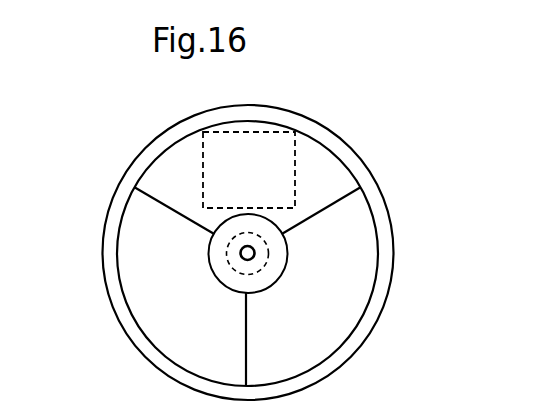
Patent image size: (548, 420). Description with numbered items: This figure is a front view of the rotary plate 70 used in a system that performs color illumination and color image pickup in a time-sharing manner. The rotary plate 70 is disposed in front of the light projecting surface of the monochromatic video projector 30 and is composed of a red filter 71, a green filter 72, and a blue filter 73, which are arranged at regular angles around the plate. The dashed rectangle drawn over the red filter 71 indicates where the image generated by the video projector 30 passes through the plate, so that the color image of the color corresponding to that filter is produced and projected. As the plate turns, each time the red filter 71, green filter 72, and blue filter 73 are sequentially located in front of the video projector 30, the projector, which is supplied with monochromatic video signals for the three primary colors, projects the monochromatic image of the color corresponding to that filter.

The monochromatic video projector 30 is at (250, 132).
The rotary plate 70 is at (369, 142).
The red filter 71 is at (158, 174).
The green filter 72 is at (140, 310).
The blue filter 73 is at (353, 317).